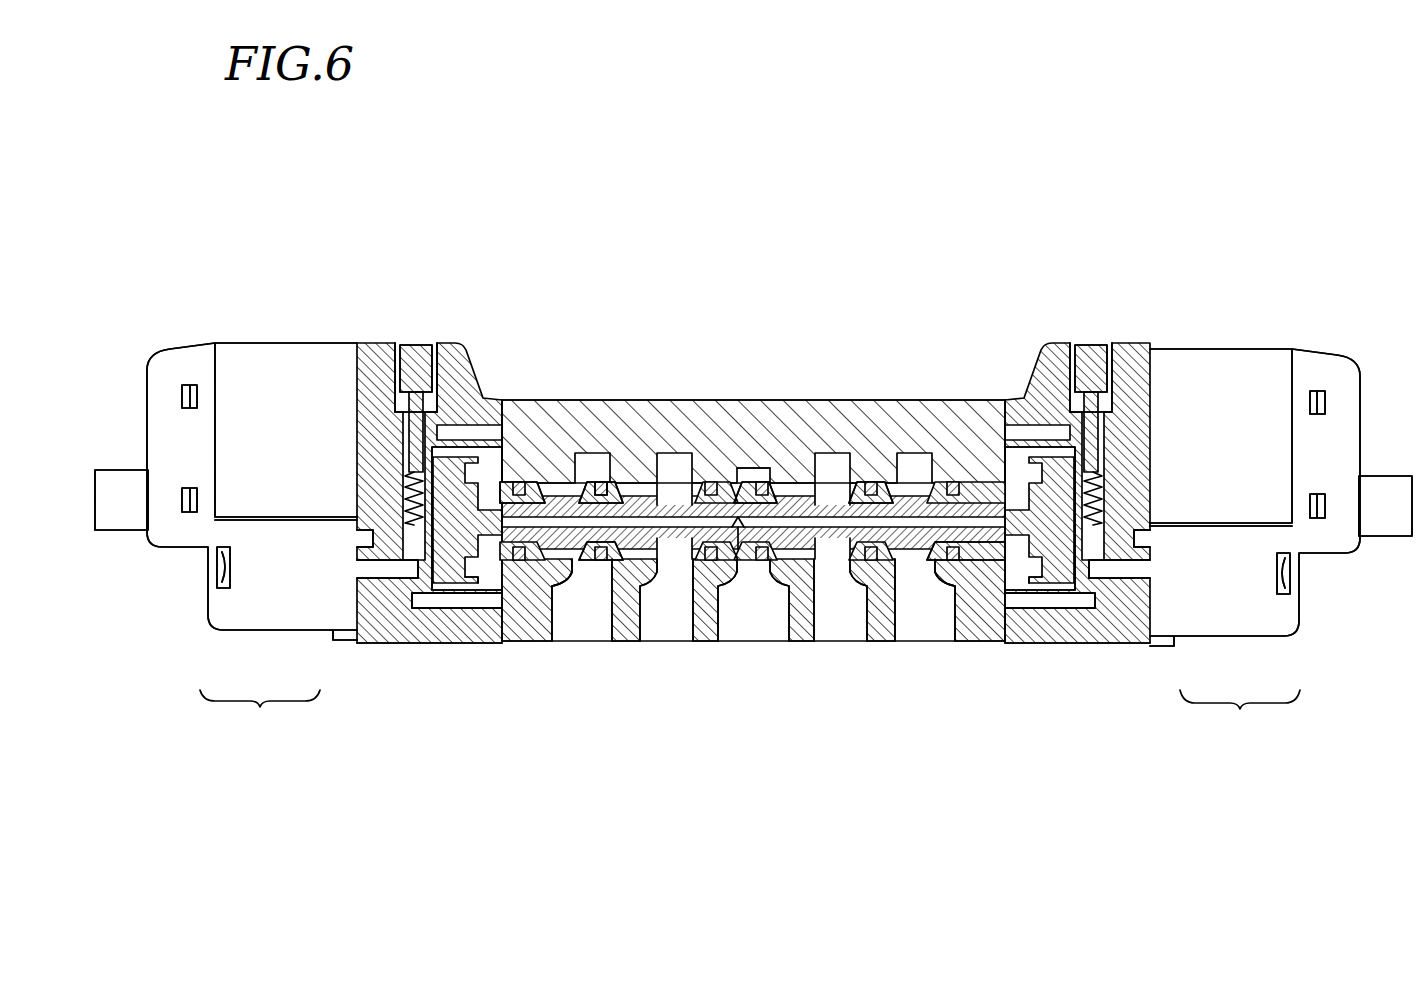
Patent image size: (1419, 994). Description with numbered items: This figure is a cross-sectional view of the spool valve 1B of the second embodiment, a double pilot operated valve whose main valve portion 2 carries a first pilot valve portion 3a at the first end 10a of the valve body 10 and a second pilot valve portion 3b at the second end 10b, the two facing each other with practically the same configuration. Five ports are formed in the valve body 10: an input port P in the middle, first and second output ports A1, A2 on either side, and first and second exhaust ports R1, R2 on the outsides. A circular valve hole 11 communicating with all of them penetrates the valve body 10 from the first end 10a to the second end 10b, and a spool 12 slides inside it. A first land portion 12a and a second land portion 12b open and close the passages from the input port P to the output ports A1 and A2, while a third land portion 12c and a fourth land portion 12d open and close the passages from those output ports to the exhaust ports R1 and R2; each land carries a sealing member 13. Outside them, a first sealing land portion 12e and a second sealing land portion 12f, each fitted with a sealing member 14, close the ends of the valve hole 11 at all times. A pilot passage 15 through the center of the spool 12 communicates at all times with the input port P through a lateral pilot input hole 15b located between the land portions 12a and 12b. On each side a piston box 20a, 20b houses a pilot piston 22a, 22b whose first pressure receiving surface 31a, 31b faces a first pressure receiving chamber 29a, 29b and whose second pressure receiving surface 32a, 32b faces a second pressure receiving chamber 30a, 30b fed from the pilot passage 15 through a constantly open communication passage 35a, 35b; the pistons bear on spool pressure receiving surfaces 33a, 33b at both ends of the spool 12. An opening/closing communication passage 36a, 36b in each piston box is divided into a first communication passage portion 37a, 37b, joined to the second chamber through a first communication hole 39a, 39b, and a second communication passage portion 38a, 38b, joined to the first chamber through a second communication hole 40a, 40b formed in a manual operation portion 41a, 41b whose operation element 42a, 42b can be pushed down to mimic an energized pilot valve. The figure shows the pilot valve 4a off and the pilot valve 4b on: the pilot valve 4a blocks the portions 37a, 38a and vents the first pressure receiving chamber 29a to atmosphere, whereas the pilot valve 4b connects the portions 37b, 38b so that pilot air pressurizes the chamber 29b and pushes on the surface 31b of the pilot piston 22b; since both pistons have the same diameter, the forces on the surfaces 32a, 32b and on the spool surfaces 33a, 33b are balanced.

The spool valve 1B is at (876, 202).
The main valve portion 2 is at (718, 277).
The first pilot valve portion 3a is at (269, 251).
The second pilot valve portion 3b is at (1254, 260).
The pilot valve 4a is at (245, 383).
The pilot valve 4b is at (1258, 390).
The valve body 10 is at (866, 400).
The first end 10a is at (502, 388).
The second end 10b is at (1009, 395).
The valve hole 11 is at (815, 470).
The spool 12 is at (790, 560).
The first land portion 12a is at (660, 480).
The second land portion 12b is at (722, 483).
The third land portion 12c is at (606, 487).
The fourth land portion 12d is at (900, 485).
The first sealing land portion 12e is at (565, 485).
The second sealing land portion 12f is at (965, 562).
The sealing member 13 is at (602, 562).
The sealing member 14 is at (522, 482).
The pilot passage 15 is at (775, 466).
The pilot input hole 15b is at (738, 555).
The piston box 20a is at (378, 362).
The piston box 20b is at (1150, 365).
The pilot piston 22a is at (443, 598).
The pilot piston 22b is at (1065, 598).
The first pressure receiving chamber 29a is at (365, 540).
The first pressure receiving chamber 29b is at (1140, 548).
The second pressure receiving chamber 30a is at (462, 355).
The second pressure receiving chamber 30b is at (1040, 355).
The first pressure receiving surface 31a is at (440, 585).
The first pressure receiving surface 31b is at (1070, 585).
The second pressure receiving surface 32a is at (478, 590).
The second pressure receiving surface 32b is at (1030, 590).
The spool pressure receiving surface 33a is at (410, 505).
The spool pressure receiving surface 33b is at (1100, 505).
The constantly open communication passage 35a is at (415, 604).
The constantly open communication passage 35b is at (1095, 605).
The opening/closing communication passage 36a is at (260, 716).
The opening/closing communication passage 36b is at (1240, 717).
The first communication passage portion 37a is at (370, 594).
The first communication passage portion 37b is at (1138, 594).
The second communication passage portion 38a is at (368, 563).
The second communication passage portion 38b is at (1140, 563).
The first communication hole 39a is at (562, 580).
The first communication hole 39b is at (950, 582).
The second communication hole 40a is at (427, 486).
The second communication hole 40b is at (1097, 478).
The manual operation portion 41a is at (432, 284).
The manual operation portion 41b is at (1090, 283).
The operation element 42a is at (400, 350).
The operation element 42b is at (1114, 350).
The first exhaust port R1 is at (585, 625).
The first output port A1 is at (665, 625).
The input port P is at (758, 625).
The second output port A2 is at (838, 625).
The second exhaust port R2 is at (910, 625).